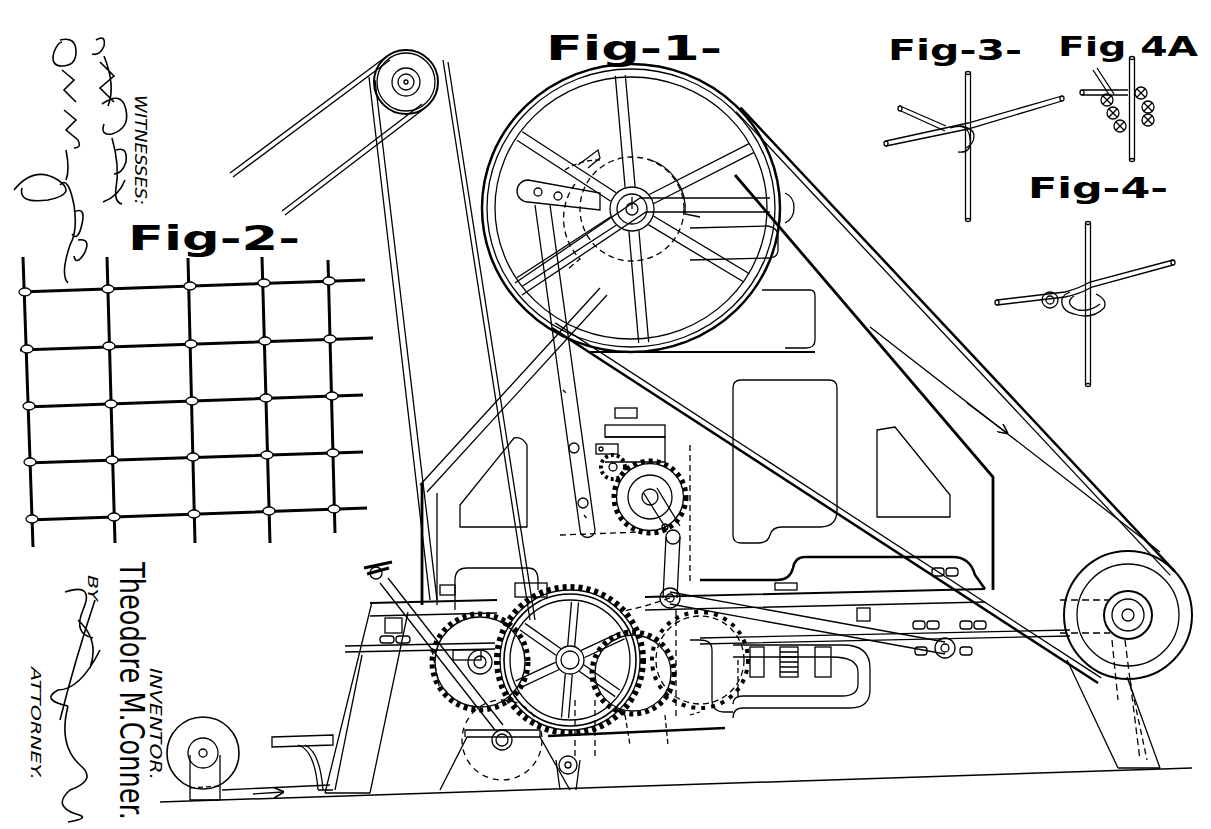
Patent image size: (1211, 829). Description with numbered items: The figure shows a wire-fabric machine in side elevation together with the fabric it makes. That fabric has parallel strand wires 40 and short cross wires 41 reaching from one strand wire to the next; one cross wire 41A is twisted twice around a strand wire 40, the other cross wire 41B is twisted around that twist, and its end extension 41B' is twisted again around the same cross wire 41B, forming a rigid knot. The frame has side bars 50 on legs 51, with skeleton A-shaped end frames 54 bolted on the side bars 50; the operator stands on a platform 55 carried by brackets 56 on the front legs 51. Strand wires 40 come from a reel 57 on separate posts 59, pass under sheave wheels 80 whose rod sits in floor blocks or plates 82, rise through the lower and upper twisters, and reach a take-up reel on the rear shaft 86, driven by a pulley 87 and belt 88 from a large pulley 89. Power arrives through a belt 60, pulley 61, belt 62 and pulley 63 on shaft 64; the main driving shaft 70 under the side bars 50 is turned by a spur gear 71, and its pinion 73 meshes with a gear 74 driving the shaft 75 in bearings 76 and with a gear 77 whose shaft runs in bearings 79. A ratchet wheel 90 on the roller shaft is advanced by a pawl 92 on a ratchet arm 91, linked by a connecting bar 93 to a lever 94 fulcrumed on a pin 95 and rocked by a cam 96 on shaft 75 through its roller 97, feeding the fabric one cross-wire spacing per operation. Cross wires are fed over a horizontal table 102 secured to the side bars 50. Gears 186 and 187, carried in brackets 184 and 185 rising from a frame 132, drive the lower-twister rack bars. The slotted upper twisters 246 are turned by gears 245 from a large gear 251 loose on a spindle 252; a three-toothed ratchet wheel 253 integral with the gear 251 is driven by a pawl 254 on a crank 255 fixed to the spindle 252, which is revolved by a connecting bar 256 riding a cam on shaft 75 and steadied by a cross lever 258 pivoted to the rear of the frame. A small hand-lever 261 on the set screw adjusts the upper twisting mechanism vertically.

In FIG. 2, the strand wires 40 is at (103, 318).
In FIG. 3, the strand wires 40 is at (970, 80).
In FIG. 4A, the strand wires 40 is at (1136, 148).
In FIG. 4, the strand wires 40 is at (1091, 250).
In FIG. 1, the strand wires 40 is at (1008, 435).
In FIG. 2, the cross wires 41 is at (75, 362).
In FIG. 3, the cross wire 41A is at (1035, 96).
In FIG. 4A, the cross wire 41A is at (1113, 106).
In FIG. 4, the cross wire 41A is at (1137, 266).
In FIG. 3, the cross wire 41B is at (934, 151).
In FIG. 4A, the cross wire 41B is at (1128, 103).
In FIG. 4, the cross wire 41B is at (1063, 286).
In FIG. 2, the end extension 41B' is at (179, 390).
In FIG. 3, the end extension 41B' is at (922, 105).
In FIG. 4A, the end extension 41B' is at (1091, 73).
In FIG. 4, the end extension 41B' is at (1039, 280).
In FIG. 1, the side bars 50 is at (356, 627).
In FIG. 1, the legs 51 is at (1100, 698).
In FIG. 1, the end frames 54 is at (478, 412).
In FIG. 1, the platform 55 is at (286, 736).
In FIG. 1, the brackets 56 is at (316, 752).
In FIG. 1, the reel 57 is at (200, 724).
In FIG. 1, the posts 59 is at (210, 760).
In FIG. 1, the belt 60 is at (278, 135).
In FIG. 1, the pulley 61 is at (432, 66).
In FIG. 1, the belt 62 is at (393, 230).
In FIG. 1, the pulley 63 is at (470, 745).
In FIG. 1, the shaft 64 is at (500, 750).
In FIG. 1, the main driving shaft 70 is at (568, 645).
In FIG. 1, the spur gear 71 is at (616, 738).
In FIG. 1, the pinion 73 is at (570, 678).
In FIG. 1, the gear 74 is at (655, 735).
In FIG. 1, the shaft 75 is at (633, 673).
In FIG. 1, the bearings 76 is at (686, 708).
In FIG. 1, the gear 77 is at (440, 684).
In FIG. 1, the bearings 79 is at (488, 658).
In FIG. 1, the sheave wheels 80 is at (578, 768).
In FIG. 1, the blocks or plates 82 is at (574, 778).
In FIG. 1, the shaft 86 is at (1128, 607).
In FIG. 1, the pulley 87 is at (1092, 566).
In FIG. 1, the belt 88 is at (828, 373).
In FIG. 1, the large pulley 89 is at (660, 244).
In FIG. 1, the ratchet wheel 90 is at (657, 163).
In FIG. 1, the ratchet arm 91 is at (528, 193).
In FIG. 1, the pawl 92 is at (586, 158).
In FIG. 1, the connecting bar 93 is at (541, 232).
In FIG. 1, the lever 94 is at (708, 598).
In FIG. 1, the pin 95 is at (947, 658).
In FIG. 1, the cam 96 is at (700, 665).
In FIG. 1, the roller 97 is at (674, 588).
In FIG. 1, the table 102 is at (556, 582).
In FIG. 1, the frame 132 is at (695, 735).
In FIG. 1, the bracket 184 is at (746, 722).
In FIG. 1, the bracket 185 is at (832, 665).
In FIG. 1, the gear 186 is at (794, 592).
In FIG. 1, the gear 187 is at (788, 700).
In FIG. 1, the gears 245 is at (606, 455).
In FIG. 1, the twister 246 is at (570, 462).
In FIG. 1, the large gear 251 is at (660, 470).
In FIG. 1, the spindle 252 is at (672, 492).
In FIG. 1, the three-toothed ratchet wheel 253 is at (668, 478).
In FIG. 1, the pawl 254 is at (675, 510).
In FIG. 1, the crank 255 is at (688, 522).
In FIG. 1, the connecting bar 256 is at (590, 556).
In FIG. 1, the cross lever 258 is at (733, 600).
In FIG. 1, the hand-lever 261 is at (622, 408).